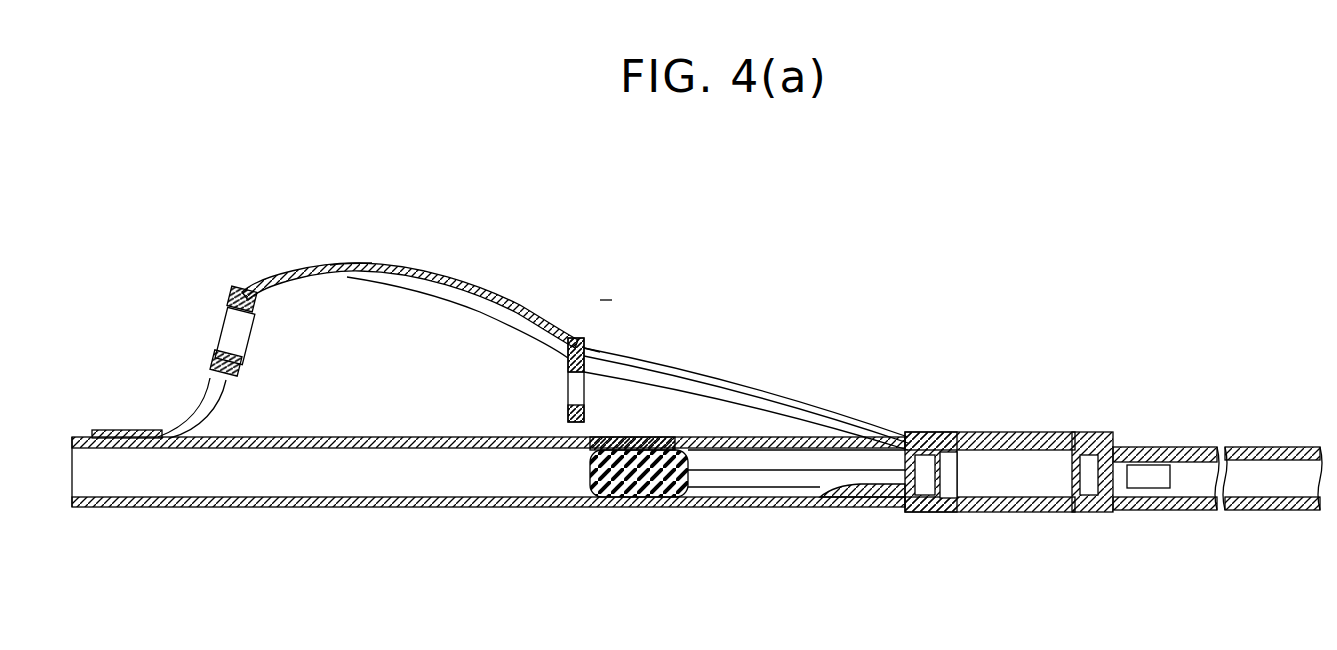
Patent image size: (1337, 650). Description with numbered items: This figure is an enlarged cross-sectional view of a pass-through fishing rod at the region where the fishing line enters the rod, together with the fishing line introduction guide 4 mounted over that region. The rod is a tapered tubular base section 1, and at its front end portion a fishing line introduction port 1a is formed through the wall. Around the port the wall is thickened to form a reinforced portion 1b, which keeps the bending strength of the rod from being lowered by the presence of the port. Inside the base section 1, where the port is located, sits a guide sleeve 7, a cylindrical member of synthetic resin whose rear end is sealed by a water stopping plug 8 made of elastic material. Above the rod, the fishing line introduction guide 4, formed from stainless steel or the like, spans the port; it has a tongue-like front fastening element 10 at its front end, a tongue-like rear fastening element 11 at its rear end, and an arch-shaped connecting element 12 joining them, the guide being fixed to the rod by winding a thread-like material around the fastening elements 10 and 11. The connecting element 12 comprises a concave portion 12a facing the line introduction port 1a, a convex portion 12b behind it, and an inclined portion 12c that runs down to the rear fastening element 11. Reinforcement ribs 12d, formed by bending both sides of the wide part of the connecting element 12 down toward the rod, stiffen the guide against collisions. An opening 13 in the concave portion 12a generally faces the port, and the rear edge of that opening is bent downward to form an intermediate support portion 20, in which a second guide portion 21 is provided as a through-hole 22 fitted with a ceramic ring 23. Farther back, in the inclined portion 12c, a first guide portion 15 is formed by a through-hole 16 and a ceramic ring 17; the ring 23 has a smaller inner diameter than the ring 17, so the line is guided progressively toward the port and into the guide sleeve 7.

The tubular base section 1 is at (1161, 447).
The fishing line introduction port 1a is at (757, 447).
The reinforced portion 1b is at (347, 507).
The fishing line introduction guide 4 is at (611, 286).
The guide sleeve 7 is at (775, 510).
The water stopping plug 8 is at (610, 500).
The front fastening element 10 is at (1012, 437).
The rear fastening element 11 is at (135, 430).
The connecting element 12 is at (498, 293).
The concave portion 12a is at (563, 337).
The convex portion 12b is at (362, 265).
The inclined portion 12c is at (208, 385).
The reinforcement rib 12d is at (455, 302).
The opening 13 is at (665, 362).
The first guide portion 15 is at (222, 290).
The through-hole 16 is at (237, 373).
The ring 17 is at (257, 303).
The intermediate support portion 20 is at (587, 353).
The second guide portion 21 is at (547, 413).
The through-hole 22 is at (587, 403).
The ring 23 is at (567, 370).